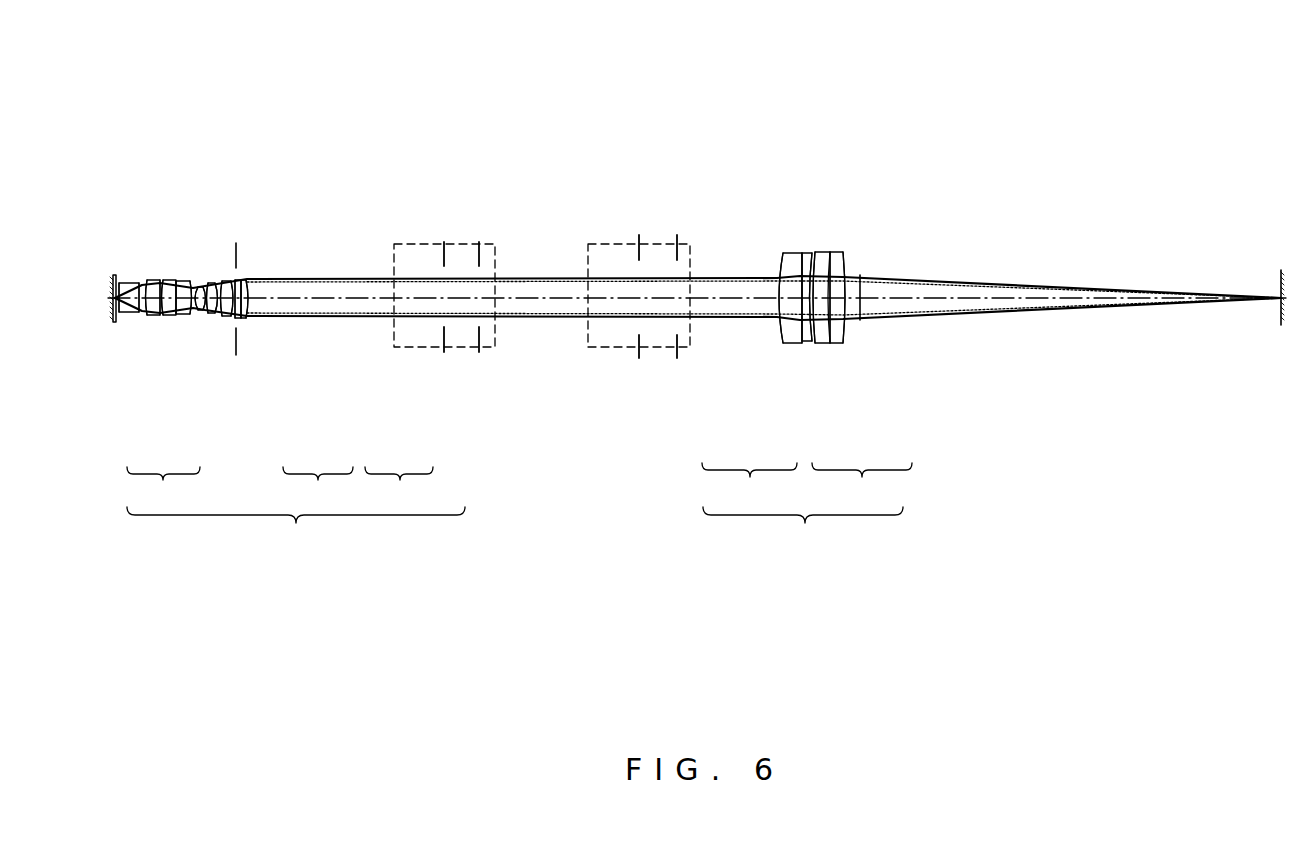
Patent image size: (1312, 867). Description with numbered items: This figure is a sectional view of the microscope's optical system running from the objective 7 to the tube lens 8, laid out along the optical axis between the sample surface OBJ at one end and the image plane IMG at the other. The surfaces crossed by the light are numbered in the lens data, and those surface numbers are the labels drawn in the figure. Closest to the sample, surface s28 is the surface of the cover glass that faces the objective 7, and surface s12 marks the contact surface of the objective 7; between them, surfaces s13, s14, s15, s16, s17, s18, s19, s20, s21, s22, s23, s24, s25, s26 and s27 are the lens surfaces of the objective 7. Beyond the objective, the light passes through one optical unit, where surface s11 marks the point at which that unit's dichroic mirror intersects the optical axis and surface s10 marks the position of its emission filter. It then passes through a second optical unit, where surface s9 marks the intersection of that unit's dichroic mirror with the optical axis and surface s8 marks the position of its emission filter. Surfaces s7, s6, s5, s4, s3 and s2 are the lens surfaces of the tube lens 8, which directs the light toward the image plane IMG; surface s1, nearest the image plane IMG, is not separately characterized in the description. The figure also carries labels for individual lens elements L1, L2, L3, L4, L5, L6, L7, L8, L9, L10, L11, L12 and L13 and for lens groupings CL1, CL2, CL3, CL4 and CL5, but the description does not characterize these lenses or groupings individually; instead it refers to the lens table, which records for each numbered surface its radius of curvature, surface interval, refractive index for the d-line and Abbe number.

The sample surface OBJ is at (112, 283).
The image plane IMG is at (1281, 284).
The objective 7 is at (296, 529).
The tube lens 8 is at (803, 529).
The cemented lens 1 CL1 is at (163, 486).
The cemented lens 2 CL2 is at (318, 486).
The cemented lens 3 CL3 is at (399, 486).
The cemented lens 4 CL4 is at (749, 484).
The cemented lens 5 CL5 is at (862, 484).
The lens L1 is at (127, 312).
The lens L2 is at (142, 312).
The lens L3 is at (153, 313).
The lens L4 is at (167, 313).
The lens L5 is at (200, 313).
The lens L6 is at (210, 315).
The lens L7 is at (225, 315).
The lens L8 is at (233, 316).
The lens L9 is at (242, 316).
The lens L10 is at (787, 343).
The lens L11 is at (802, 341).
The lens L12 is at (817, 343).
The lens L13 is at (833, 343).
The optical surface s1 is at (860, 283).
The lens surface of tube lens s2 is at (843, 270).
The lens surface of tube lens s3 is at (830, 260).
The lens surface of tube lens s4 is at (823, 267).
The lens surface of tube lens s5 is at (807, 263).
The lens surface of tube lens s6 is at (802, 253).
The lens surface of tube lens s7 is at (778, 272).
The position of emission filter s8 is at (677, 246).
The intersection of dichroic mirror and optical axis s9 is at (639, 246).
The position of emission filter s10 is at (480, 262).
The intersection of dichroic mirror and optical axis s11 is at (445, 261).
The contact surface of objective s12 is at (237, 247).
The lens surface of objective s13 is at (252, 283).
The lens surface of objective s14 is at (248, 282).
The lens surface of objective s15 is at (235, 276).
The lens surface of objective s16 is at (231, 272).
The lens surface of objective s17 is at (222, 275).
The lens surface of objective s18 is at (218, 280).
The lens surface of objective s19 is at (212, 283).
The lens surface of objective s20 is at (206, 285).
The lens surface of objective s21 is at (200, 286).
The lens surface of objective s22 is at (184, 282).
The lens surface of objective s23 is at (174, 282).
The lens surface of objective s24 is at (165, 281).
The lens surface of objective s25 is at (155, 281).
The lens surface of objective s26 is at (147, 281).
The lens surface of objective s27 is at (138, 283).
The surface of cover glass closest to objective s28 is at (118, 283).